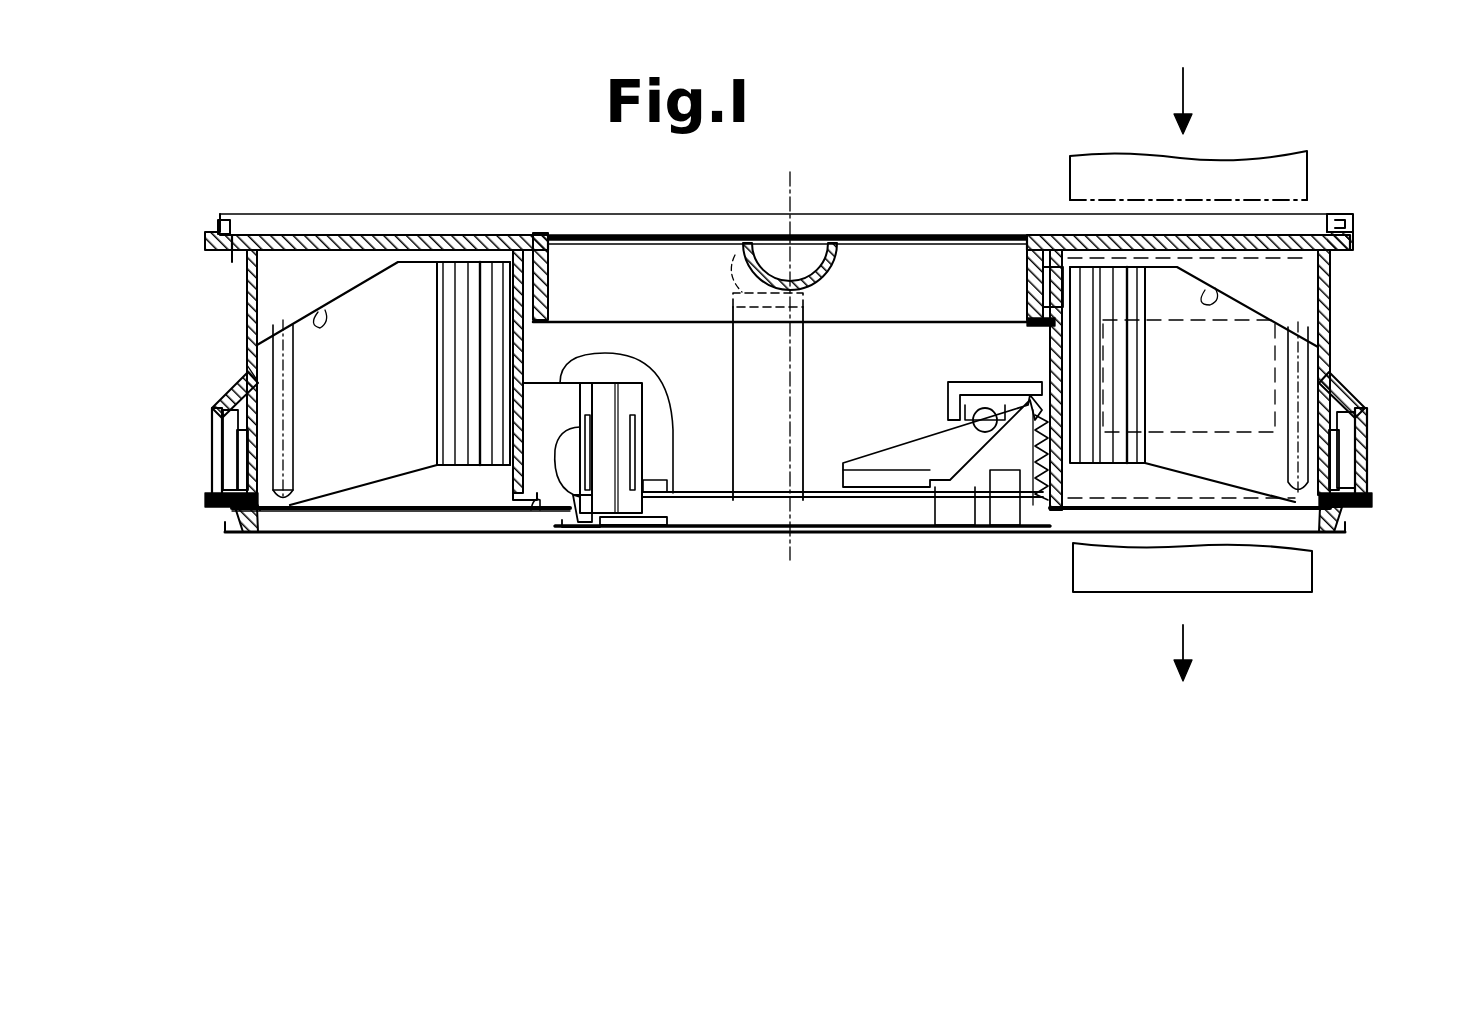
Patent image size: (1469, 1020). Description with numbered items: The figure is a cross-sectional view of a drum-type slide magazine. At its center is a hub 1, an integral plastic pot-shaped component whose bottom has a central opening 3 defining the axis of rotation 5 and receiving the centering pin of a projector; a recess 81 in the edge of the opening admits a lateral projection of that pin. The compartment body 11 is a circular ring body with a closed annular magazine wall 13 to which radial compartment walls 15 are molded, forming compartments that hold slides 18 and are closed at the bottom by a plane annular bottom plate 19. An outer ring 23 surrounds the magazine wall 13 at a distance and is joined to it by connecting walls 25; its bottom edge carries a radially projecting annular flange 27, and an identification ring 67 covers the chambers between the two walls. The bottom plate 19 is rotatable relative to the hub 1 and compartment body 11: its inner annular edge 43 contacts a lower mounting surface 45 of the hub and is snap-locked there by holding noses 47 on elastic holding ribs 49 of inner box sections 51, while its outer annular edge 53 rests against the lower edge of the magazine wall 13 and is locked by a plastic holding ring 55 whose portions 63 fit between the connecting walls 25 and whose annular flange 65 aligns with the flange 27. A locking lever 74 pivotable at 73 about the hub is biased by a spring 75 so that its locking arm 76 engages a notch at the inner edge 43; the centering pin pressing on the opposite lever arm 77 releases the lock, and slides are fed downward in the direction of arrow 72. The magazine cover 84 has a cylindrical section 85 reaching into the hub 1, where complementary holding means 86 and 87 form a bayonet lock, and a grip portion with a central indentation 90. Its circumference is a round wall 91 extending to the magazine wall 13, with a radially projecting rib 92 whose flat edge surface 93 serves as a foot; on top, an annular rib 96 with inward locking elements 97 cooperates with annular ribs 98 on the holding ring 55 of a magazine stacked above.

The hub 1 is at (450, 238).
The opening 3 is at (882, 533).
The axis of rotation 5 is at (792, 205).
The compartment body 11 is at (238, 370).
The annular magazine wall 13 is at (240, 392).
The compartment walls 15 is at (325, 308).
The slide 18 is at (1268, 172).
The bottom plate 19 is at (395, 533).
The outer ring 23 is at (225, 440).
The connecting walls 25 is at (220, 480).
The annular flange 27 is at (212, 503).
The inner annular edge 43 is at (545, 527).
The lower mounting surface 45 is at (500, 524).
The holding noses 47 is at (582, 527).
The holding ribs 49 is at (617, 527).
The inner box sections 51 is at (663, 527).
The outer annular edge 53 is at (280, 512).
The holding ring 55 is at (256, 512).
The portions 63 is at (236, 470).
The annular flange 65 is at (222, 520).
The identification ring 67 is at (228, 420).
The arrow 72 is at (1178, 640).
The pivot 73 is at (985, 412).
The locking lever 74 is at (942, 533).
The spring 75 is at (1040, 533).
The locking arm 76 is at (992, 533).
The lever arm 77 is at (880, 465).
The recess 81 is at (742, 533).
The magazine cover 84 is at (512, 300).
The cylindrical section 85 is at (548, 300).
The holding means 86 is at (1028, 305).
The holding means 87 is at (722, 274).
The central indentation 90 is at (855, 262).
The round wall 91 is at (252, 312).
The rib 92 is at (218, 262).
The edge surface 93 is at (212, 243).
The annular rib 96 is at (222, 228).
The locking elements 97 is at (1332, 224).
The annular ribs 98 is at (248, 535).